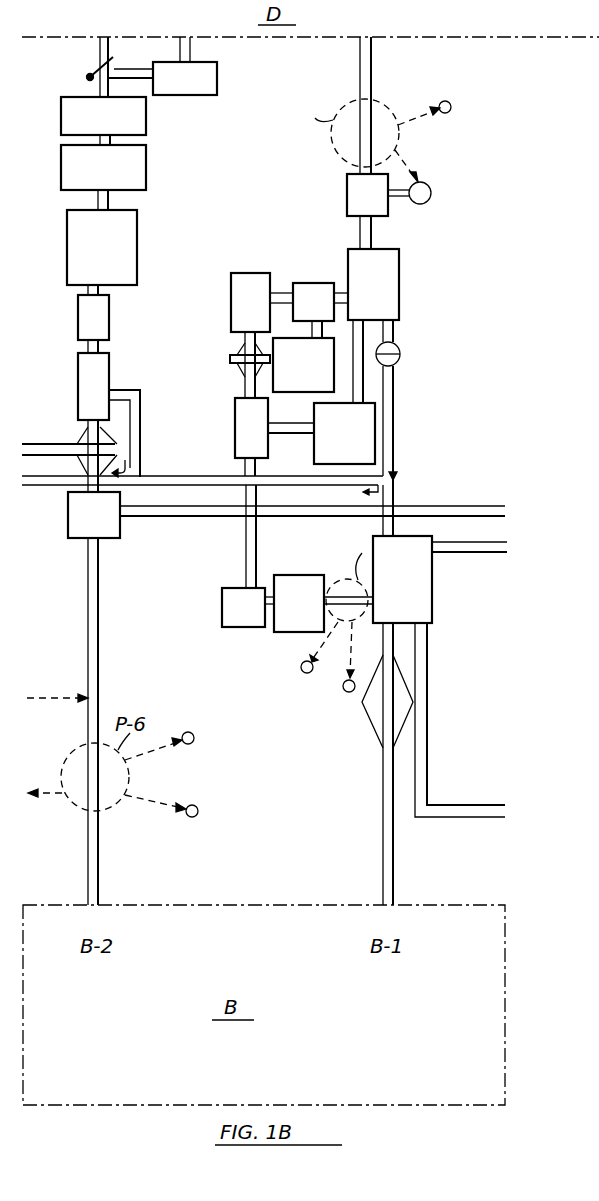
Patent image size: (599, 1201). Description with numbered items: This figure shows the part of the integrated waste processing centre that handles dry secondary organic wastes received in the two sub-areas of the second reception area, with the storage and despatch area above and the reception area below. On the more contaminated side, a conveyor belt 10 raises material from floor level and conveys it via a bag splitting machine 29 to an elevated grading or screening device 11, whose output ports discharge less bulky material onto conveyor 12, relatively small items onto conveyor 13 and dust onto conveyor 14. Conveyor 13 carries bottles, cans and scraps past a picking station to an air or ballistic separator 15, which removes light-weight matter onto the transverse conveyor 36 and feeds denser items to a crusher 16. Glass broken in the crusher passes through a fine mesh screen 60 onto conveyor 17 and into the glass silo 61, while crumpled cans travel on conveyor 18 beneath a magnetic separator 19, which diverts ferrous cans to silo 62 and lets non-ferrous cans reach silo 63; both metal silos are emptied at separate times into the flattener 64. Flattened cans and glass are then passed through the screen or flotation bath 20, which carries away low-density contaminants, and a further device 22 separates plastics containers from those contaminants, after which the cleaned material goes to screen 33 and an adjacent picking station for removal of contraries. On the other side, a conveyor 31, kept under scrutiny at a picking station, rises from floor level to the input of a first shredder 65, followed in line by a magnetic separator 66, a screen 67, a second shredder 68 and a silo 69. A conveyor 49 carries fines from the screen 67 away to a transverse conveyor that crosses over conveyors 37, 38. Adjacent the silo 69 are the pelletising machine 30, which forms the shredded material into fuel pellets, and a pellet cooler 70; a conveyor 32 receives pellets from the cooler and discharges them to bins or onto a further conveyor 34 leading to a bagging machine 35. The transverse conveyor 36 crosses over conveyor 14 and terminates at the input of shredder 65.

The conveyor belt 10 is at (383, 798).
The grading or screening device 11 is at (434, 586).
The conveyor 12 is at (430, 706).
The conveyor 13 is at (338, 578).
The conveyor 14 is at (396, 490).
The air separator or ballistic separator 15 is at (295, 633).
The crusher 16 is at (220, 603).
The conveyor 17 is at (295, 435).
The conveyor 18 is at (245, 385).
The magnetic separator 19 is at (240, 350).
The screen or flotation bath 20 is at (400, 290).
The separation device 22 is at (400, 358).
The bag splitting machine 29 is at (372, 713).
The pelletising machine 30 is at (147, 158).
The conveyor 31 is at (93, 663).
The conveyor 32 is at (92, 60).
The screen 33 is at (347, 192).
The conveyor 34 is at (133, 72).
The bagging machine 35 is at (218, 72).
The transverse conveyor 36 is at (483, 504).
The conveyor 37 is at (246, 552).
The conveyor 38 is at (95, 490).
The conveyor 49 is at (165, 443).
The fine mesh screen 60 is at (235, 442).
The glass silo 61 is at (376, 432).
The silo 62 is at (290, 392).
The silo 63 is at (231, 300).
The flattener 64 is at (312, 283).
The first shredder 65 is at (82, 527).
The magnetic separator 66 is at (80, 441).
The screen 67 is at (110, 378).
The second shredder 68 is at (110, 318).
The silo 69 is at (138, 248).
The pellet cooler 70 is at (147, 118).